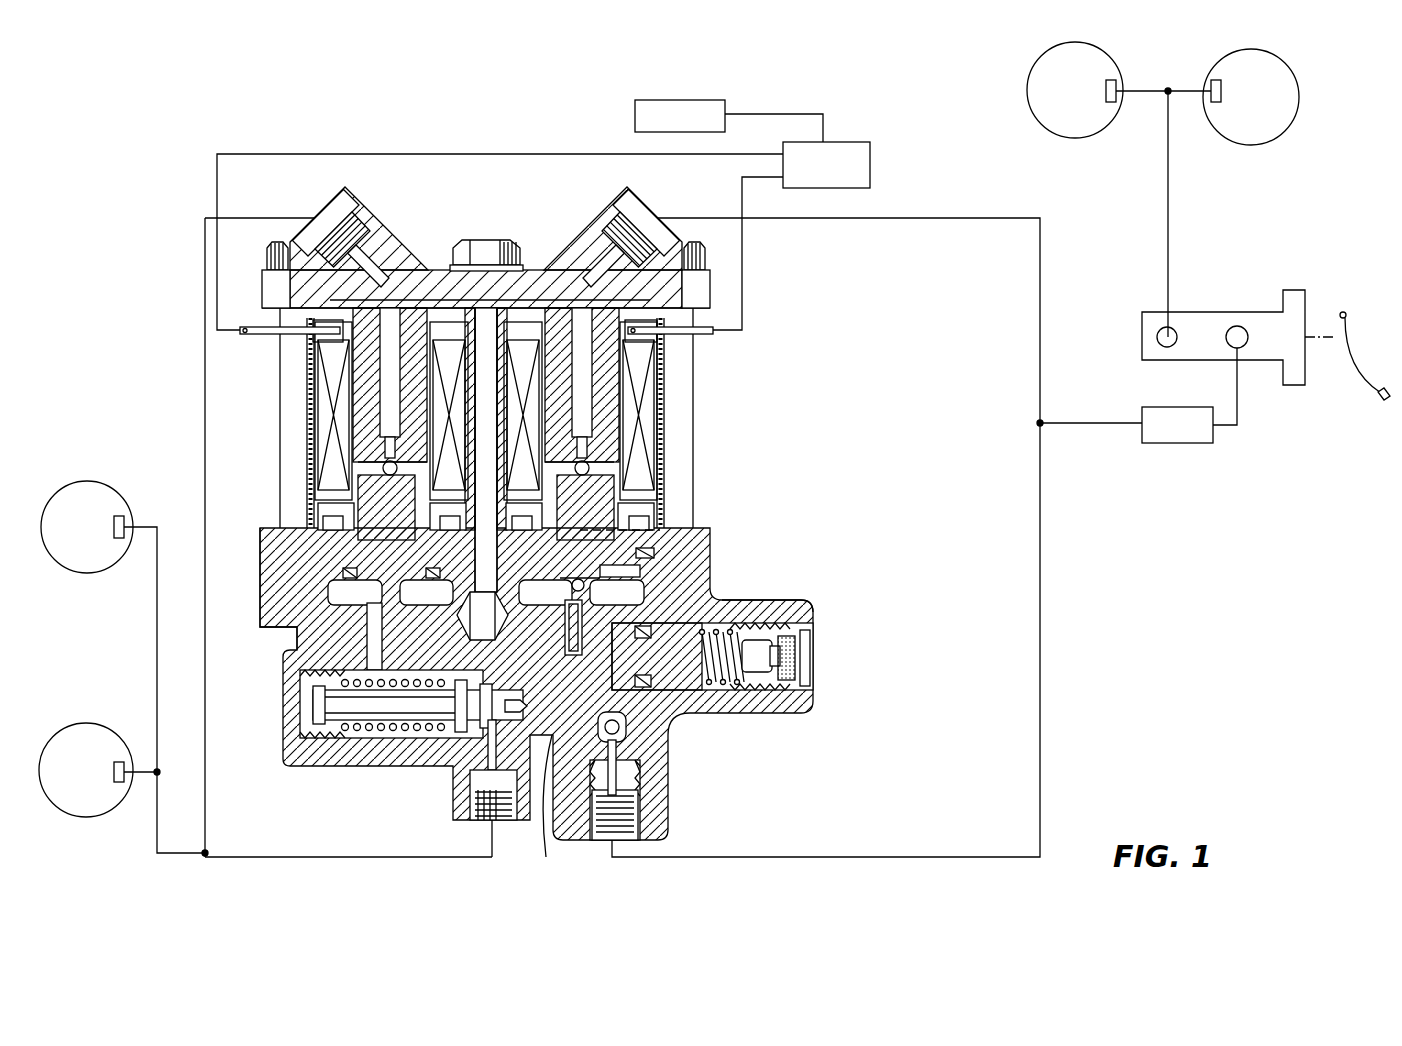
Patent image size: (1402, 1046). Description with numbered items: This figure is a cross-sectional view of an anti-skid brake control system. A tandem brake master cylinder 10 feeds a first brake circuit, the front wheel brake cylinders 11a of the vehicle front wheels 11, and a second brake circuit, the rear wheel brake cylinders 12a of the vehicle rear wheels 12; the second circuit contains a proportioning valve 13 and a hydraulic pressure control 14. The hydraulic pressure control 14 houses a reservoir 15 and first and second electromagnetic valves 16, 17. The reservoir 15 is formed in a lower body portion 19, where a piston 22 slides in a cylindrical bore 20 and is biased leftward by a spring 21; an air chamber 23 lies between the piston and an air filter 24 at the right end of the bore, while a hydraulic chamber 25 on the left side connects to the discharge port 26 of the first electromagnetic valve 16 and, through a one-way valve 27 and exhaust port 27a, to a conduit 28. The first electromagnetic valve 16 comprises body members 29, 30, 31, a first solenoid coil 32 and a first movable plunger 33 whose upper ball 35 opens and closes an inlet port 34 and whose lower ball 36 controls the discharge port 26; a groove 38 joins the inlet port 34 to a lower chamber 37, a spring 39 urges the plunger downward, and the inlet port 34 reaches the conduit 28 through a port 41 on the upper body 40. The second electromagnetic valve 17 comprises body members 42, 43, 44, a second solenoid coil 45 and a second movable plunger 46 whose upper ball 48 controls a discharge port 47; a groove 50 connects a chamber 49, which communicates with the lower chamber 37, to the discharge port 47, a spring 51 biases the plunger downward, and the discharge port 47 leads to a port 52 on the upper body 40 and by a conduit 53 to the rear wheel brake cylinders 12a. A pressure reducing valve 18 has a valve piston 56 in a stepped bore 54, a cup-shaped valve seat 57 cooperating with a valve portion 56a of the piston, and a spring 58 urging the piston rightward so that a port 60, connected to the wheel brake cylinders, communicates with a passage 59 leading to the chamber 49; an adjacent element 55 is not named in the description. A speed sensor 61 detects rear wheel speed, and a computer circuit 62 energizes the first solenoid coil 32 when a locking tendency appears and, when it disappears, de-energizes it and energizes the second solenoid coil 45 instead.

The tandem brake master cylinder 10 is at (1272, 367).
The vehicle front wheels 11 is at (1119, 59).
The front wheel brake cylinders 11a is at (1112, 105).
The vehicle rear wheels 12 is at (100, 480).
The rear wheel brake cylinders 12a is at (122, 515).
The proportioning valve 13 is at (1142, 410).
The hydraulic pressure control 14 is at (734, 442).
The reservoir 15 is at (724, 696).
The first electromagnetic valve 16 is at (646, 416).
The second electromagnetic valve 17 is at (343, 408).
The pressure reducing valve 18 is at (375, 744).
The lower body portion 19 is at (745, 602).
The cylindrical bore 20 is at (795, 603).
The spring 21 is at (757, 688).
The piston 22 is at (813, 690).
The air chamber 23 is at (733, 642).
The air filter 24 is at (790, 650).
The hydraulic chamber 25 is at (578, 635).
The discharge port 26 is at (547, 858).
The one-way valve 27 is at (614, 730).
The exhaust port 27a is at (614, 768).
The conduit 28 is at (780, 858).
The body member 29 is at (650, 525).
The body member 30 is at (665, 452).
The body member 31 is at (640, 310).
The first solenoid coil 32 is at (645, 400).
The first movable plunger 33 is at (613, 490).
The inlet port 34 is at (580, 355).
The upper ball 35 is at (590, 462).
The lower ball 36 is at (592, 584).
The lower chamber 37 is at (633, 567).
The groove 38 is at (662, 530).
The spring 39 is at (660, 553).
The upper body 40 is at (573, 253).
The port 41 is at (653, 213).
The body member 42 is at (323, 523).
The body member 43 is at (307, 422).
The body member 44 is at (350, 315).
The second solenoid coil 45 is at (332, 368).
The second movable plunger 46 is at (370, 488).
The discharge port 47 is at (387, 343).
The upper ball 48 is at (386, 464).
The chamber 49 is at (343, 592).
The groove 50 is at (300, 540).
The spring 51 is at (343, 573).
The port 52 is at (323, 213).
The conduit 53 is at (205, 705).
The stepped bore 54 is at (417, 735).
The piston 55 is at (377, 759).
The valve piston 56 is at (305, 735).
The valve portion 56a is at (490, 748).
The cup-shaped valve seat 57 is at (483, 727).
The spring 58 is at (360, 740).
The passage 59 is at (367, 640).
The port 60 is at (505, 800).
The speed sensor 61 is at (635, 115).
The computer circuit 62 is at (866, 142).